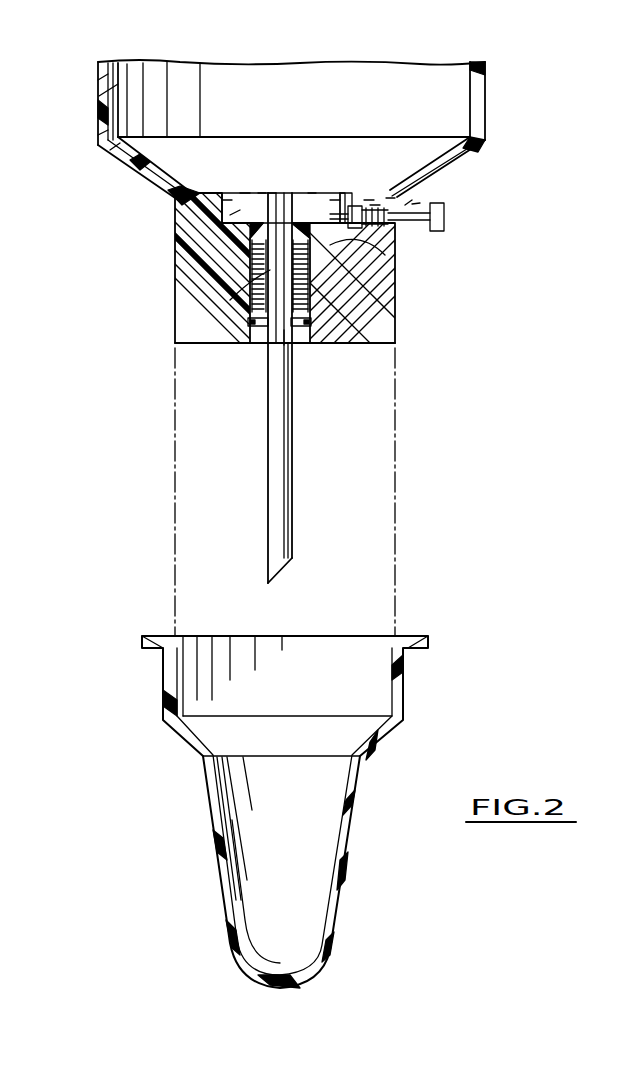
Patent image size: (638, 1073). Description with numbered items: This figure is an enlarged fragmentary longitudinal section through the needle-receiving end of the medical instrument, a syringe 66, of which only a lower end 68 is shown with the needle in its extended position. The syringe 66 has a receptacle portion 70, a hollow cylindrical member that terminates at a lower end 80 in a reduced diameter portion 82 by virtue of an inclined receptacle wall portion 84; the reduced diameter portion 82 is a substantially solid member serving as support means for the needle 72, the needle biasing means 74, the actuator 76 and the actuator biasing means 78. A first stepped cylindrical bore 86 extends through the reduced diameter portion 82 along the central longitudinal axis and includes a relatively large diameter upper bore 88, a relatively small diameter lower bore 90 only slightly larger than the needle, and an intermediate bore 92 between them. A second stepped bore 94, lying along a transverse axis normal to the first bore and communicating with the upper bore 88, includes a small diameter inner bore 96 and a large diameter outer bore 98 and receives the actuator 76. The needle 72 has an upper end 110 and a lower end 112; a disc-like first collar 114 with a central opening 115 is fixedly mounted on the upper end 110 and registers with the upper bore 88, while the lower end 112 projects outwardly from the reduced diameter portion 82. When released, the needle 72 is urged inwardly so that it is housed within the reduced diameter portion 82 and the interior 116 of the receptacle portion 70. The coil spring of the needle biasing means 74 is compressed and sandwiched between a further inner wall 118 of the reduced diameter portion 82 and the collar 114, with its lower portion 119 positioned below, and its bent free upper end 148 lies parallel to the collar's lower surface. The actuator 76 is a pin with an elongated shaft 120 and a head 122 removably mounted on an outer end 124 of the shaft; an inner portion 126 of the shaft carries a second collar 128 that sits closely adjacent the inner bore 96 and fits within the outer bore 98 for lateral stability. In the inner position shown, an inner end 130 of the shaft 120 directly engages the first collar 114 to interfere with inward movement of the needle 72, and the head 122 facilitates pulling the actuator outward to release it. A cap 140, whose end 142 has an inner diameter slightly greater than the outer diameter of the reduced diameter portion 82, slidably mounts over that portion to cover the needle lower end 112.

The syringe 66 is at (380, 58).
The lower end of the syringe 68 is at (502, 100).
The receptacle portion 70 is at (100, 62).
The needle 72 is at (292, 492).
The needle biasing means 74 is at (262, 286).
The actuator 76 is at (404, 233).
The actuator biasing means 78 is at (372, 205).
The lower end of the receptacle portion 80 is at (142, 196).
The reduced diameter portion 82 is at (230, 208).
The inclined receptacle wall portion 84 is at (122, 150).
The first stepped cylindrical bore 86 is at (235, 212).
The upper bore 88 is at (300, 190).
The lower bore 90 is at (285, 340).
The intermediate bore 92 is at (392, 343).
The second stepped bore 94 is at (385, 255).
The inner bore 96 is at (350, 190).
The outer bore 98 is at (390, 198).
The upper end of the needle 110 is at (272, 192).
The lower end of the needle 112 is at (288, 560).
The first collar 114 is at (246, 190).
The central opening 115 is at (262, 190).
The interior of the receptacle portion 116 is at (122, 80).
The further inner wall 118 is at (260, 345).
The lower portion of the first coil spring 119 is at (302, 343).
The elongated shaft 120 is at (410, 202).
The head 122 is at (446, 220).
The outer end of the shaft 124 is at (420, 203).
The inner portion of the shaft 126 is at (335, 200).
The second collar 128 is at (370, 200).
The inner end of the shaft 130 is at (312, 192).
The cap 140 is at (230, 918).
The end of the cap 142 is at (168, 683).
The free upper end of the first coil spring 148 is at (310, 260).